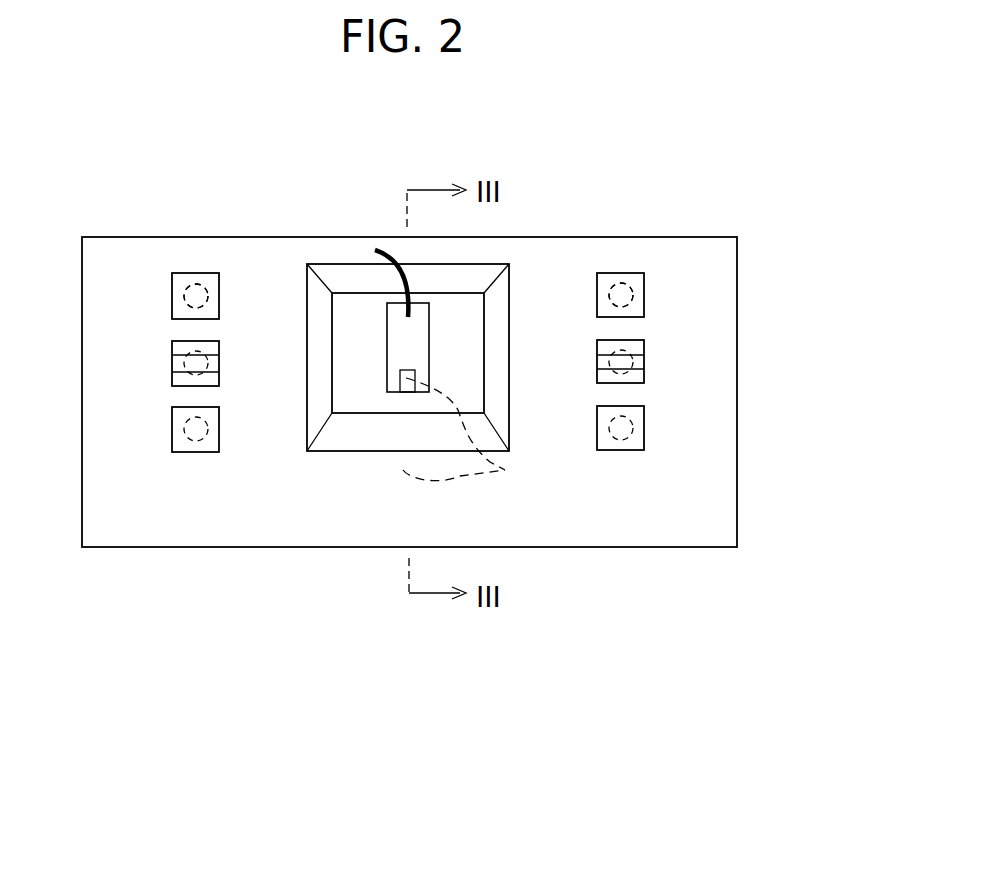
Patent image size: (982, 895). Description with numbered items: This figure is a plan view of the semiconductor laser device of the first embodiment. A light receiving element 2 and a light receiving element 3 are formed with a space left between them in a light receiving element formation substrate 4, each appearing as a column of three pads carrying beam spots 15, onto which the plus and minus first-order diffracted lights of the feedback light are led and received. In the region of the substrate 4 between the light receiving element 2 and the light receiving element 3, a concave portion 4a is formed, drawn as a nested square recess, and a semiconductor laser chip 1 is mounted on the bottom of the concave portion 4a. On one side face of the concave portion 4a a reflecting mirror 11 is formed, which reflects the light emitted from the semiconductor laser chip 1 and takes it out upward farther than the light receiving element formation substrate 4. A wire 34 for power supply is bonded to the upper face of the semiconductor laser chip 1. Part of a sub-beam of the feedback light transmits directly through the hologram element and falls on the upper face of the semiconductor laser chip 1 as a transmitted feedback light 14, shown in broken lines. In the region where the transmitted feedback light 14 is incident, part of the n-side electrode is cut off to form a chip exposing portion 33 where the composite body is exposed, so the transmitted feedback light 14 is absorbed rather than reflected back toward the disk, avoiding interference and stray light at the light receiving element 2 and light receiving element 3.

The semiconductor laser chip 1 is at (386, 323).
The light receiving element 2 is at (172, 307).
The light receiving element 3 is at (644, 293).
The light receiving element formation substrate 4 is at (737, 472).
The concave portion 4a is at (456, 295).
The reflecting mirror 11 is at (345, 438).
The transmitted feedback light 14 is at (475, 436).
The beam spots 15 is at (196, 285).
The chip exposing portion 33 is at (415, 375).
The wire 34 is at (379, 250).